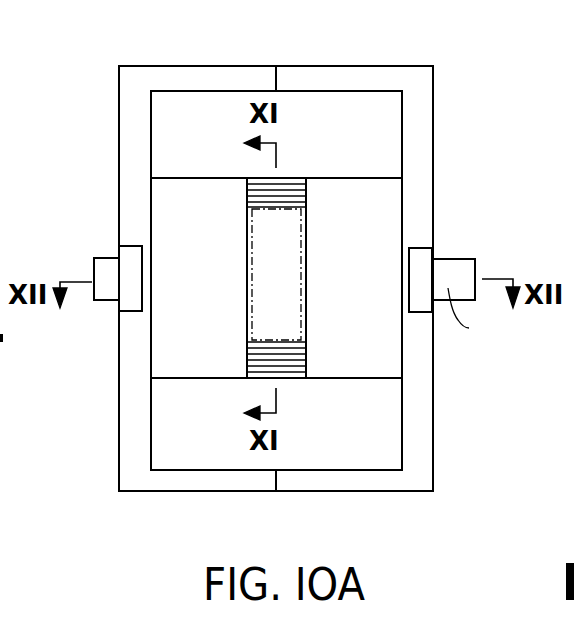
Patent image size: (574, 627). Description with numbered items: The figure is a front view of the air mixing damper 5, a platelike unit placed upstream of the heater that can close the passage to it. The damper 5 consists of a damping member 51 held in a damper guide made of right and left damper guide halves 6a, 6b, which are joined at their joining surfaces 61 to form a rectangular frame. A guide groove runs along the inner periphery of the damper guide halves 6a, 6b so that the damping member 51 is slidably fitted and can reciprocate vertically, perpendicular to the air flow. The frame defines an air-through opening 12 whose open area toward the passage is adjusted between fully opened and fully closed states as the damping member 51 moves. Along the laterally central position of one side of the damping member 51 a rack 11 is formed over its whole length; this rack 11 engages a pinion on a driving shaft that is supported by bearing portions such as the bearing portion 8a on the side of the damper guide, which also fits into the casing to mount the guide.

The air mixing damper 5 is at (458, 100).
The right damper guide half 6a is at (131, 79).
The left damper guide half 6b is at (417, 90).
The joining surface 61 is at (284, 84).
The air-through opening 12 is at (187, 112).
The damping member 51 is at (388, 191).
The rack 11 is at (286, 196).
The bearing portion 8a is at (108, 288).